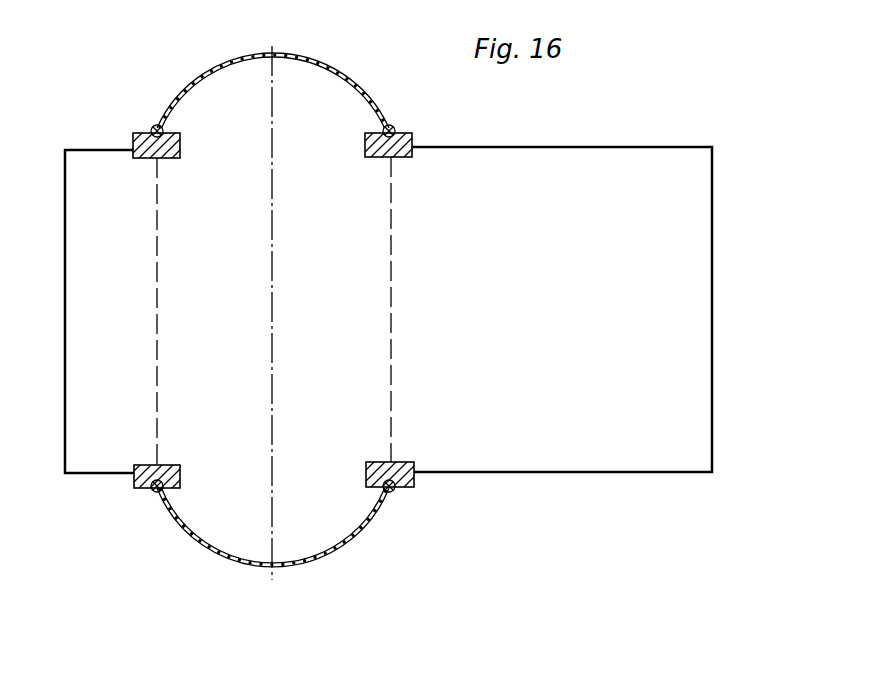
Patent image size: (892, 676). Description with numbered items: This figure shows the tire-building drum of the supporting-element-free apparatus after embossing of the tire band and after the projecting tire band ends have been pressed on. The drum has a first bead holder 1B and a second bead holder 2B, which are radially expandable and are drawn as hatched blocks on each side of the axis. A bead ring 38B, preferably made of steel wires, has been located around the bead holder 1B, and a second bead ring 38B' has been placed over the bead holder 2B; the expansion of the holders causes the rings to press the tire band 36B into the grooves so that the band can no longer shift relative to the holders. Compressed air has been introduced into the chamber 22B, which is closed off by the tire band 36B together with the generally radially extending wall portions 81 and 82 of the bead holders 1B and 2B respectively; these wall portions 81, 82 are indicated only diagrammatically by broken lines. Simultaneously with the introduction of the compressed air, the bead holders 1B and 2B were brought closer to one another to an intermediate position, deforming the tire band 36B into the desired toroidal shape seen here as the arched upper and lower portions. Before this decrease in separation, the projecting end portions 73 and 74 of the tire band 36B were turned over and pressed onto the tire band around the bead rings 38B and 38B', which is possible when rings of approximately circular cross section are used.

The first bead holder 1B is at (133, 133).
The second bead holder 2B is at (415, 137).
The tire band 36B is at (303, 56).
The projecting end portion of tire band 73 is at (167, 108).
The projecting end portion of tire band 74 is at (378, 106).
The bead ring 38B is at (243, 523).
The second bead ring 38B' is at (425, 505).
The chamber 22B is at (306, 313).
The radially extending wall portion 81 is at (157, 362).
The radially extending wall portion 82 is at (391, 360).